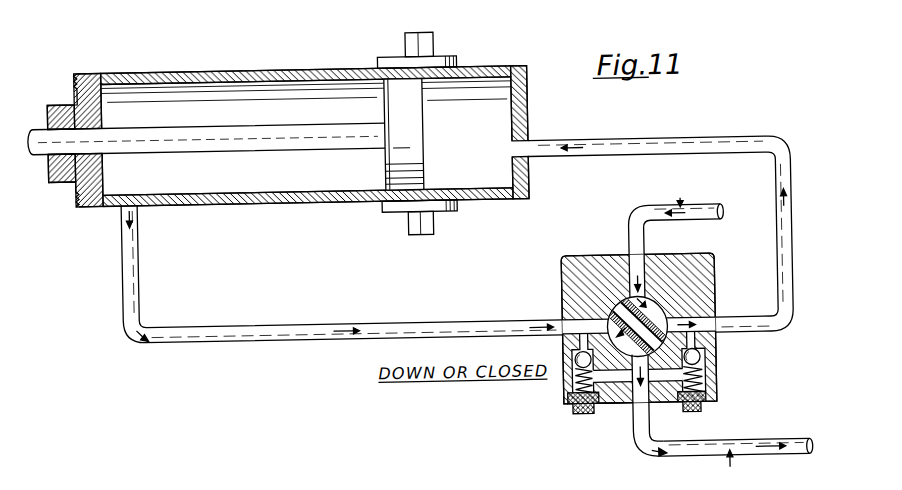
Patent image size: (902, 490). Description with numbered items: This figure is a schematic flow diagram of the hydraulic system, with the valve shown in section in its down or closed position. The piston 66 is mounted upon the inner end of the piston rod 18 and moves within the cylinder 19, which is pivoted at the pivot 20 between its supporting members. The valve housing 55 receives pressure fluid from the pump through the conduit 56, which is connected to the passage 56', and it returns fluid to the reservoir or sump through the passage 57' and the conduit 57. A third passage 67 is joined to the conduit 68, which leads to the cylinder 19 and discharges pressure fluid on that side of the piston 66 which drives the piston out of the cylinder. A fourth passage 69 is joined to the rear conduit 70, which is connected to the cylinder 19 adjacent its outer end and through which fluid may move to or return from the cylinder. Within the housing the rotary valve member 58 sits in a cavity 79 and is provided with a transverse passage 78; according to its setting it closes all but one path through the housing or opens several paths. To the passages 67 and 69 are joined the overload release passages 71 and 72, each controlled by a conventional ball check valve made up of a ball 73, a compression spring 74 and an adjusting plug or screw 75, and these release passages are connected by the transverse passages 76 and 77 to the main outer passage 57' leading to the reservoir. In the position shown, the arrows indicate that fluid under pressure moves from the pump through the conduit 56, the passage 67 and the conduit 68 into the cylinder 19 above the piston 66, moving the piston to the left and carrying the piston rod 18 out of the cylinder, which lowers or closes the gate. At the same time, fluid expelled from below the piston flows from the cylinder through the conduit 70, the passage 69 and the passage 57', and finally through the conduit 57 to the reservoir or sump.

The piston rod 18 is at (199, 143).
The cylinder 19 is at (266, 201).
The pivot 20 is at (437, 32).
The piston 66 is at (419, 137).
The rear conduit 70 is at (424, 320).
The conduit 68 is at (777, 243).
The conduit 56 is at (693, 217).
The valve housing 55 is at (578, 262).
The passage 56' is at (656, 263).
The transverse passage 78 is at (672, 266).
The rotary valve member 58 is at (652, 300).
The cavity 79 is at (660, 315).
The third passage 67 is at (647, 325).
The fourth passage 69 is at (564, 319).
The overload release passage 71 is at (698, 345).
The overload release passage 72 is at (565, 349).
The ball 73 is at (570, 380).
The compression spring 74 is at (565, 402).
The adjusting plug 75 is at (580, 416).
The transverse passage 76 is at (662, 389).
The transverse passage 77 is at (605, 408).
The passage 57' is at (636, 405).
The conduit 57 is at (738, 447).